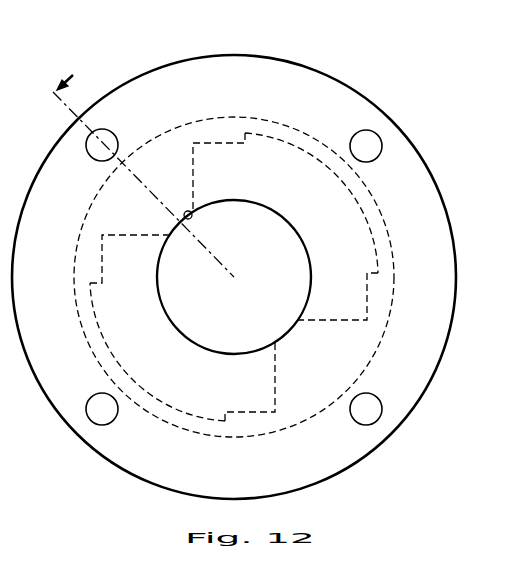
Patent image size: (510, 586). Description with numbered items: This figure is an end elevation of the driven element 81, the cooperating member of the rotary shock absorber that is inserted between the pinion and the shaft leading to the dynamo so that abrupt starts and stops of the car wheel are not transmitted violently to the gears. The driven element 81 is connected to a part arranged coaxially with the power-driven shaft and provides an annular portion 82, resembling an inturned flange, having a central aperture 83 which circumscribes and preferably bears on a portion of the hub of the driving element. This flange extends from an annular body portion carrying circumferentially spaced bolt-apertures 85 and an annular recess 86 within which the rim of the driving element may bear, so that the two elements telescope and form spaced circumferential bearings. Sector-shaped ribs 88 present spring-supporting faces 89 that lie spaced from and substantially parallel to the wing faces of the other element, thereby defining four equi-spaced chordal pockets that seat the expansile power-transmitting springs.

The driven element 81 is at (234, 277).
The annular portion 82 is at (234, 277).
The aperture 83 is at (311, 272).
The bolt-apertures 85 is at (378, 135).
The annular recess 86 is at (308, 137).
The sector-shaped ribs 88 is at (297, 322).
The spring-supporting faces 89 is at (193, 173).